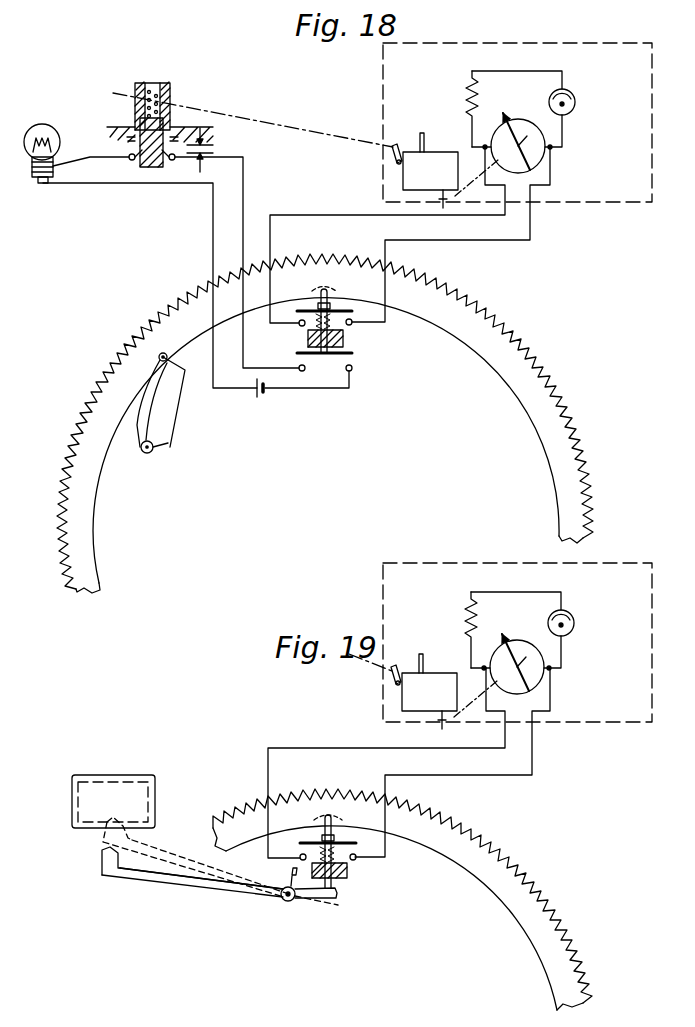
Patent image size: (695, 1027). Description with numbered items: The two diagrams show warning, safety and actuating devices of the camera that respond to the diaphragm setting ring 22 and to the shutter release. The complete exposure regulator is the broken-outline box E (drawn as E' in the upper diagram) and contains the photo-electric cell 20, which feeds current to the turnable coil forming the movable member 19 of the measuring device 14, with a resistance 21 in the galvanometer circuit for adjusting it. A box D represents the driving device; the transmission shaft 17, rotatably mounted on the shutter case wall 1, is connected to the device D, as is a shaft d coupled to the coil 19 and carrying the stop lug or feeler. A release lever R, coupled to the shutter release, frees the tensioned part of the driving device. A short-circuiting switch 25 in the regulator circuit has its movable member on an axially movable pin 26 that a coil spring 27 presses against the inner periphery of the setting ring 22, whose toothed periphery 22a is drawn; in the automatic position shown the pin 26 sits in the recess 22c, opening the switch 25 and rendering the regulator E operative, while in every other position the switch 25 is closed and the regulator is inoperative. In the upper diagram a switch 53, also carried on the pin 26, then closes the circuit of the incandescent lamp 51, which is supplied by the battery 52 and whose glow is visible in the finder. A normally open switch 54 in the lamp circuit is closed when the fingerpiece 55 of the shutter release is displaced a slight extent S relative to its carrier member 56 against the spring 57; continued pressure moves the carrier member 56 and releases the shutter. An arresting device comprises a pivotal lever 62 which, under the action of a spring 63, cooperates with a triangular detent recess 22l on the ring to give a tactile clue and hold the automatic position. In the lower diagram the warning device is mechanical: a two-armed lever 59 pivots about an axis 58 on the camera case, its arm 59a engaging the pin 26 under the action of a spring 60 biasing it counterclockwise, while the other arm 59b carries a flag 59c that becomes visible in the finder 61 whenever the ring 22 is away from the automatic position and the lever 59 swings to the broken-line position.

In FIG. 18, the axis line 1 is at (212, 126).
In FIG. 18, the measuring device 14 is at (549, 137).
In FIG. 19, the measuring device 14 is at (548, 659).
In FIG. 18, the transmission shaft 17 is at (421, 140).
In FIG. 19, the transmission shaft 17 is at (426, 662).
In FIG. 18, the movable member 19 is at (537, 156).
In FIG. 19, the movable member 19 is at (536, 677).
In FIG. 18, the photo-electric cell 20 is at (577, 102).
In FIG. 19, the photo-electric cell 20 is at (576, 623).
In FIG. 18, the resistance 21 is at (470, 100).
In FIG. 19, the resistance 21 is at (467, 609).
In FIG. 18, the setting ring 22 is at (566, 508).
In FIG. 19, the setting ring 22 is at (556, 943).
In FIG. 18, the ring teeth 22a is at (566, 406).
In FIG. 19, the ring teeth 22a is at (520, 866).
In FIG. 18, the recess 22c is at (338, 291).
In FIG. 19, the recess 22c is at (340, 820).
In FIG. 18, the triangular detent recess 22l is at (147, 333).
In FIG. 18, the short circuiting switch 25 is at (356, 319).
In FIG. 19, the short circuiting switch 25 is at (358, 854).
In FIG. 18, the pin 26 is at (312, 336).
In FIG. 19, the pin 26 is at (347, 881).
In FIG. 18, the coil spring 27 is at (333, 325).
In FIG. 19, the coil spring 27 is at (340, 862).
In FIG. 18, the incandescent lamp 51 is at (48, 128).
In FIG. 18, the battery 52 is at (255, 393).
In FIG. 18, the switch 53 is at (356, 364).
In FIG. 18, the electrical switch 54 is at (128, 160).
In FIG. 18, the fingerpiece 55 is at (162, 100).
In FIG. 18, the carrier member 56 is at (150, 170).
In FIG. 18, the spring 57 is at (159, 88).
In FIG. 19, the axis 58 is at (289, 902).
In FIG. 19, the two-armed lever 59 is at (213, 885).
In FIG. 19, the lever arm 59a is at (325, 906).
In FIG. 19, the lever arm 59b is at (147, 877).
In FIG. 19, the flag 59c is at (105, 863).
In FIG. 19, the spring 60 is at (271, 900).
In FIG. 19, the finder 61 is at (128, 788).
In FIG. 18, the pivotal lever 62 is at (170, 406).
In FIG. 18, the spring 63 is at (160, 452).
In FIG. 18, the driving device D is at (413, 178).
In FIG. 19, the driving device D is at (412, 699).
In FIG. 18, the release lever R is at (392, 156).
In FIG. 19, the release lever R is at (391, 677).
In FIG. 18, the shaft d is at (445, 207).
In FIG. 19, the shaft d is at (446, 727).
In FIG. 19, the exposure regulator E is at (517, 618).
In FIG. 18, the exposure regulator E' is at (517, 104).
In FIG. 18, the gap S is at (214, 150).